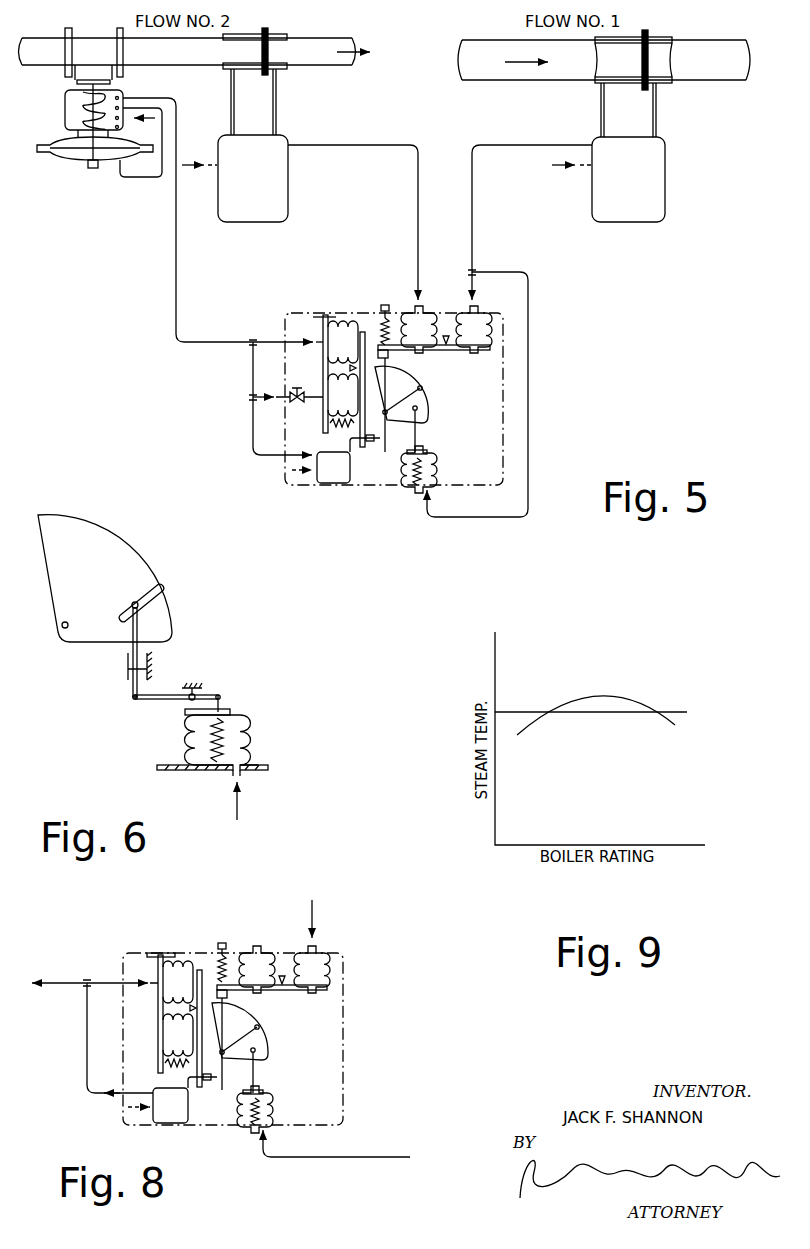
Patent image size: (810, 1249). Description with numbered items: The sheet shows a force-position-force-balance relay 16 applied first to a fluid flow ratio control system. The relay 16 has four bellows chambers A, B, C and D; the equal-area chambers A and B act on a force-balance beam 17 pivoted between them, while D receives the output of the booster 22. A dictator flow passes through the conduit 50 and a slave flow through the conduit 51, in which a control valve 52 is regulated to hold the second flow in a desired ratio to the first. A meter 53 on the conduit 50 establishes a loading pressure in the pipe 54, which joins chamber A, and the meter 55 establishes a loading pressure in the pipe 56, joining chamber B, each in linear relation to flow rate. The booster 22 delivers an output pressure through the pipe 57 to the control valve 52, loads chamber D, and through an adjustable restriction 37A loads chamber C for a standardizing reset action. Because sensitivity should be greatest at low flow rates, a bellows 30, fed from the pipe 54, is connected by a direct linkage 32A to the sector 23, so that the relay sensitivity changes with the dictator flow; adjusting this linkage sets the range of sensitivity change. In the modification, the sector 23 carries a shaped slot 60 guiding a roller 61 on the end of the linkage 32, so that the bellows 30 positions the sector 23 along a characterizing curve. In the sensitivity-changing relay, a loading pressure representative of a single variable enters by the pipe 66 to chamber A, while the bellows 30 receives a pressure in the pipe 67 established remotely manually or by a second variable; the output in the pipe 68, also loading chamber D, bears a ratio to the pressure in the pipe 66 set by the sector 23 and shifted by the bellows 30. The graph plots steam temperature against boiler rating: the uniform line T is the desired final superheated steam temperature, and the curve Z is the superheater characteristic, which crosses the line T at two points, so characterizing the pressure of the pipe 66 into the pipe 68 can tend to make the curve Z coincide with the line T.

In FIG. 5, the force-position-force-balance relay 16 is at (357, 311).
In FIG. 8, the force-position-force-balance relay 16 is at (198, 950).
In FIG. 5, the force-balance beam 17 is at (456, 352).
In FIG. 5, the booster 22 is at (333, 467).
In FIG. 5, the sensitivity sector 23 is at (440, 400).
In FIG. 6, the sensitivity sector 23 is at (140, 540).
In FIG. 8, the sensitivity sector 23 is at (270, 1037).
In FIG. 5, the bellows 30 is at (437, 468).
In FIG. 6, the bellows 30 is at (260, 735).
In FIG. 8, the bellows 30 is at (278, 1105).
In FIG. 6, the linkage 32 is at (150, 703).
In FIG. 5, the direct linkage 32A is at (418, 437).
In FIG. 5, the adjustable restriction 37A is at (298, 403).
In FIG. 5, the conduit 50 is at (713, 83).
In FIG. 5, the conduit 51 is at (340, 66).
In FIG. 5, the control valve 52 is at (54, 126).
In FIG. 5, the flow transmitter 53 is at (641, 189).
In FIG. 5, the pipe 54 is at (572, 140).
In FIG. 5, the meter 55 is at (266, 189).
In FIG. 5, the pipe 56 is at (413, 233).
In FIG. 5, the pipe 57 is at (177, 288).
In FIG. 6, the shaped slot 60 is at (154, 586).
In FIG. 6, the roller 61 is at (130, 604).
In FIG. 8, the pipe 66 is at (314, 912).
In FIG. 8, the pipe 67 is at (375, 1156).
In FIG. 8, the pipe 68 is at (60, 980).
In FIG. 9, the uniform line T is at (512, 710).
In FIG. 9, the characteristic curve Z is at (617, 690).